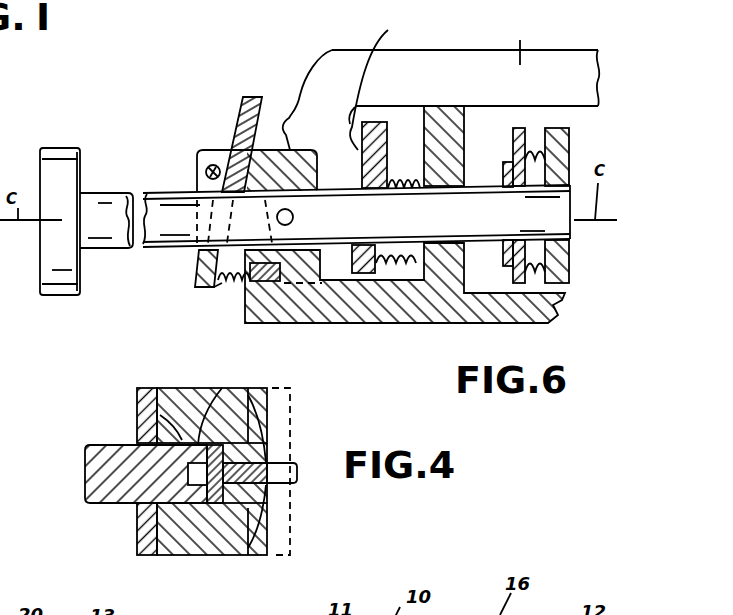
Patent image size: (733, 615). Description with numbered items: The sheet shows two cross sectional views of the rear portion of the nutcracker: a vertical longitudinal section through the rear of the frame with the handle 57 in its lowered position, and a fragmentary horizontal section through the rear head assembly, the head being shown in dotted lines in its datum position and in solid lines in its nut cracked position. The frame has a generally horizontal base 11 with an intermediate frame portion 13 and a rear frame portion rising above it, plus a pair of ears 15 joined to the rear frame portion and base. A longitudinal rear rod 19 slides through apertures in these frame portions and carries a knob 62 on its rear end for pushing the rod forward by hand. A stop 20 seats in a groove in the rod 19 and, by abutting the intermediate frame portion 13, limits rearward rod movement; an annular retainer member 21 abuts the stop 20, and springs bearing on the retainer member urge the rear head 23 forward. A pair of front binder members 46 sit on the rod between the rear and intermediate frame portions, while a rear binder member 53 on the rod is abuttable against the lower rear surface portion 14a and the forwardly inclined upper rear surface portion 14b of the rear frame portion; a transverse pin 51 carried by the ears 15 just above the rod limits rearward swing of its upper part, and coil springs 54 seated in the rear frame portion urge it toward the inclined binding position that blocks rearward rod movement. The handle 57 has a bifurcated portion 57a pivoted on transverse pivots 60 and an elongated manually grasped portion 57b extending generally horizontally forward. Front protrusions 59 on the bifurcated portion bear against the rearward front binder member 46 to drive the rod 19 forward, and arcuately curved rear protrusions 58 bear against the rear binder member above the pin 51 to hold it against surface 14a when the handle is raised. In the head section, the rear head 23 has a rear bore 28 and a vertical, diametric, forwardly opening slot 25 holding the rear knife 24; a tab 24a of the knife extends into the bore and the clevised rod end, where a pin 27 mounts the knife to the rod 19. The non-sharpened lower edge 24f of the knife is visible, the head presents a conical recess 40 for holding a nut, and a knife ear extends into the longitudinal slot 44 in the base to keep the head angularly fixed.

In FIG. 6, the knob 62 is at (58, 172).
In FIG. 6, the transverse pin 51 is at (197, 158).
In FIG. 6, the ears 15 is at (220, 157).
In FIG. 6, the rear rod 19 is at (178, 196).
In FIG. 4, the rear rod 19 is at (103, 475).
In FIG. 6, the upper rear surface portion 14b is at (270, 145).
In FIG. 6, the rear protrusions 58 is at (335, 108).
In FIG. 6, the bifurcated handle portion 57a is at (386, 70).
In FIG. 6, the front protrusions 59 is at (350, 112).
In FIG. 6, the intermediate frame portion 13 is at (443, 120).
In FIG. 6, the manually grasped portion 57b is at (517, 38).
In FIG. 6, the handle 57 is at (584, 57).
In FIG. 6, the annular retainer member 21 is at (513, 148).
In FIG. 4, the annular retainer member 21 is at (145, 547).
In FIG. 6, the rear head 23 is at (575, 170).
In FIG. 4, the rear head 23 is at (175, 517).
In FIG. 6, the transverse pivots 60 is at (294, 216).
In FIG. 6, the front binder members 46 is at (372, 250).
In FIG. 6, the stop 20 is at (503, 250).
In FIG. 6, the rear binder member 53 is at (199, 267).
In FIG. 6, the coil springs 54 is at (222, 283).
In FIG. 6, the lower rear surface portion 14a is at (222, 283).
In FIG. 6, the base 11 is at (395, 324).
In FIG. 6, the longitudinal slot 44 is at (525, 323).
In FIG. 4, the pin 27 is at (196, 390).
In FIG. 4, the rear knife 24 is at (250, 390).
In FIG. 4, the head rear bore 28 is at (157, 420).
In FIG. 4, the conical recess 40 is at (258, 447).
In FIG. 4, the tab 24a is at (288, 465).
In FIG. 4, the rear knife edge 24f is at (297, 481).
In FIG. 4, the slot 25 is at (262, 516).